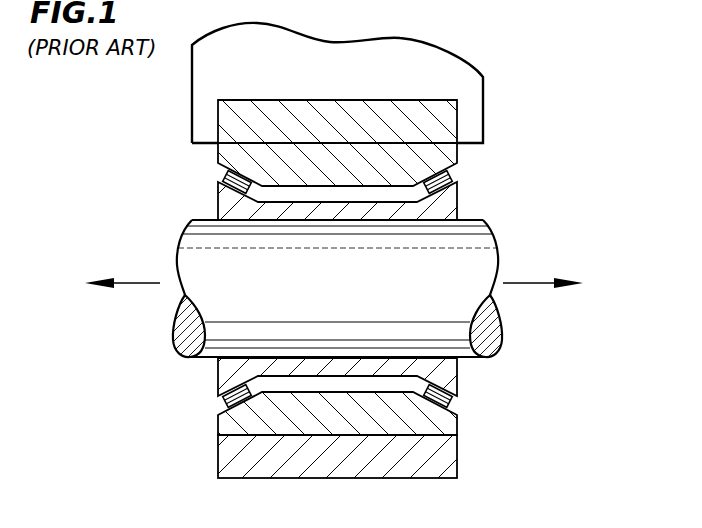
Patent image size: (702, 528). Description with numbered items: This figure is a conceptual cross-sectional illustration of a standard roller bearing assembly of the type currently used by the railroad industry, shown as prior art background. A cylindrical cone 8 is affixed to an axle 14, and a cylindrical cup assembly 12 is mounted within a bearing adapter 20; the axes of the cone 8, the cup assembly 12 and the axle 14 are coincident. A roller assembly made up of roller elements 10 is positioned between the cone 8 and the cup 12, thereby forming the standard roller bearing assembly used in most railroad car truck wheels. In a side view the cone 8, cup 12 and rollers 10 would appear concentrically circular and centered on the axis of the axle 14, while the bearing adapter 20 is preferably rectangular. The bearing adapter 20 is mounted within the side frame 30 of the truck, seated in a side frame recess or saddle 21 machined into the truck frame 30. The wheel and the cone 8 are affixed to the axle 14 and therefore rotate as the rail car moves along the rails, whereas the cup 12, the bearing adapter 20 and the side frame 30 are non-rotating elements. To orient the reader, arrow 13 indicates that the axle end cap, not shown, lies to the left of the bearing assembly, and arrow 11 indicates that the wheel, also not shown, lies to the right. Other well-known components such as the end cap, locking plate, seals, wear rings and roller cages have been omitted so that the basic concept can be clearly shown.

The cone 8 is at (447, 197).
The roller elements 10 is at (220, 176).
The arrow 11 is at (537, 282).
The cup assembly 12 is at (447, 153).
The arrow 13 is at (137, 283).
The axle 14 is at (478, 242).
The bearing adapter 20 is at (387, 110).
The saddle 21 is at (268, 104).
The side frame 30 is at (363, 50).